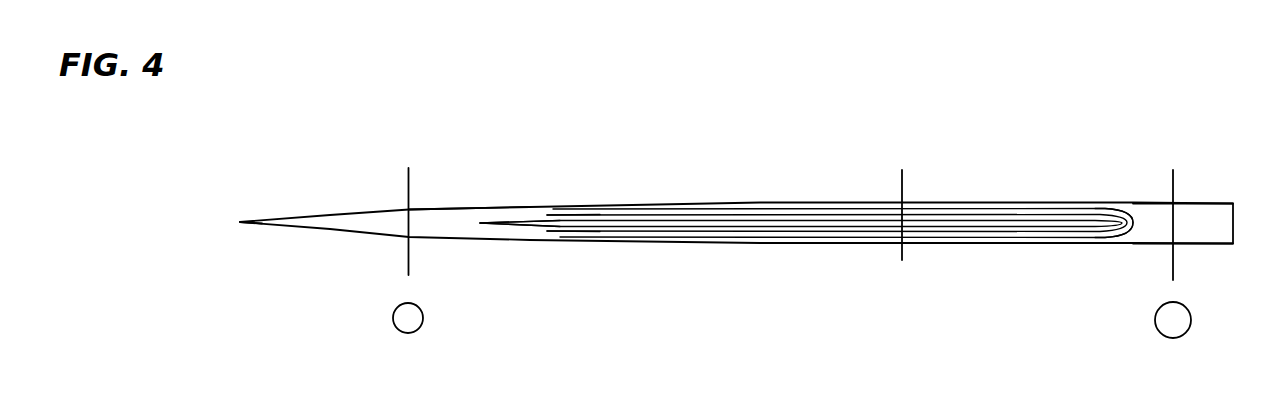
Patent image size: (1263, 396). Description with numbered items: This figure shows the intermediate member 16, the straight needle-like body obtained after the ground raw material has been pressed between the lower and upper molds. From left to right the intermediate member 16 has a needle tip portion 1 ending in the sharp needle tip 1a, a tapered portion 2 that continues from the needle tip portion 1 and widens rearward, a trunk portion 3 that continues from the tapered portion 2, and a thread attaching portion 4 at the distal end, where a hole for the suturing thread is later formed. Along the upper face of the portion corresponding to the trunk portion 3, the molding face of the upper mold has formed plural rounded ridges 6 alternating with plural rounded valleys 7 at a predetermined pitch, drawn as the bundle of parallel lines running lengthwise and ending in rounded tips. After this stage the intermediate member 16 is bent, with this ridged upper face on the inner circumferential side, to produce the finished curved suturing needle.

The needle tip portion 1 is at (337, 199).
The needle tip 1a is at (240, 223).
The tapered portion 2 is at (441, 198).
The trunk portion 3 is at (769, 189).
The thread attaching portion 4 is at (1206, 190).
The ridges 6 is at (862, 207).
The valleys 7 is at (720, 212).
The intermediate member 16 is at (825, 192).